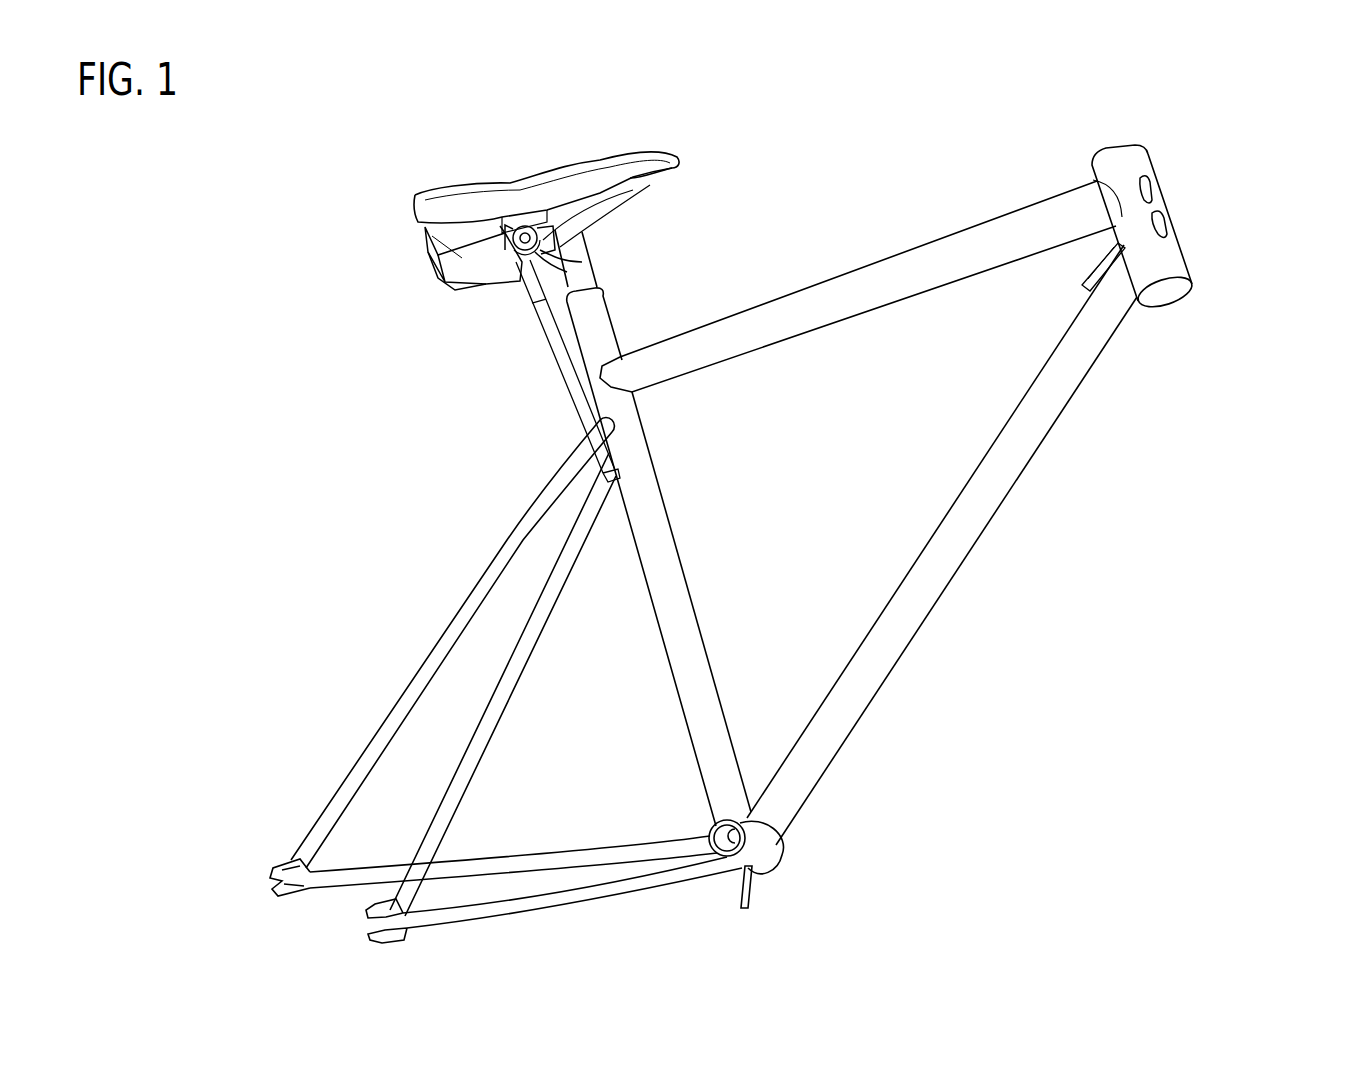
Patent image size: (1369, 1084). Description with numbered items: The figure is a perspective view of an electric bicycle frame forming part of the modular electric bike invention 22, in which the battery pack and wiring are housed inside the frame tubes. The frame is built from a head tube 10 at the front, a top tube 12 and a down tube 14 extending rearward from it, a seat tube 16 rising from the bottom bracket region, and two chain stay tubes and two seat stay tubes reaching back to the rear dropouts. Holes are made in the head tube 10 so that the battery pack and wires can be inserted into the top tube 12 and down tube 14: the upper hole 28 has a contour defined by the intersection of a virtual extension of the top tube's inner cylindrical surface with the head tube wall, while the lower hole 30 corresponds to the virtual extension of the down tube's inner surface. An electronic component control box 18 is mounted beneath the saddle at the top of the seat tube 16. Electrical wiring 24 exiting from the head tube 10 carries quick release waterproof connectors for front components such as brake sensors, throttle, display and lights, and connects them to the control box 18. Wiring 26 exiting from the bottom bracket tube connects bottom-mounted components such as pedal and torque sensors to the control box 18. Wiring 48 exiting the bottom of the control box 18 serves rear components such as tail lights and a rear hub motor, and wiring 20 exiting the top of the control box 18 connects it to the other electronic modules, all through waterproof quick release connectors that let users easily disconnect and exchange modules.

The head tube 10 is at (1120, 172).
The top tube 12 is at (848, 297).
The down tube 14 is at (930, 573).
The seat tube 16 is at (672, 597).
The electronic component control box 18 is at (484, 274).
The wiring 20 is at (585, 228).
The invention 22 is at (1060, 707).
The electrical wiring 24 is at (1078, 286).
The wiring 26 is at (752, 893).
The upper hole 28 is at (1160, 192).
The lower hole 30 is at (1175, 233).
The wiring 48 is at (548, 368).